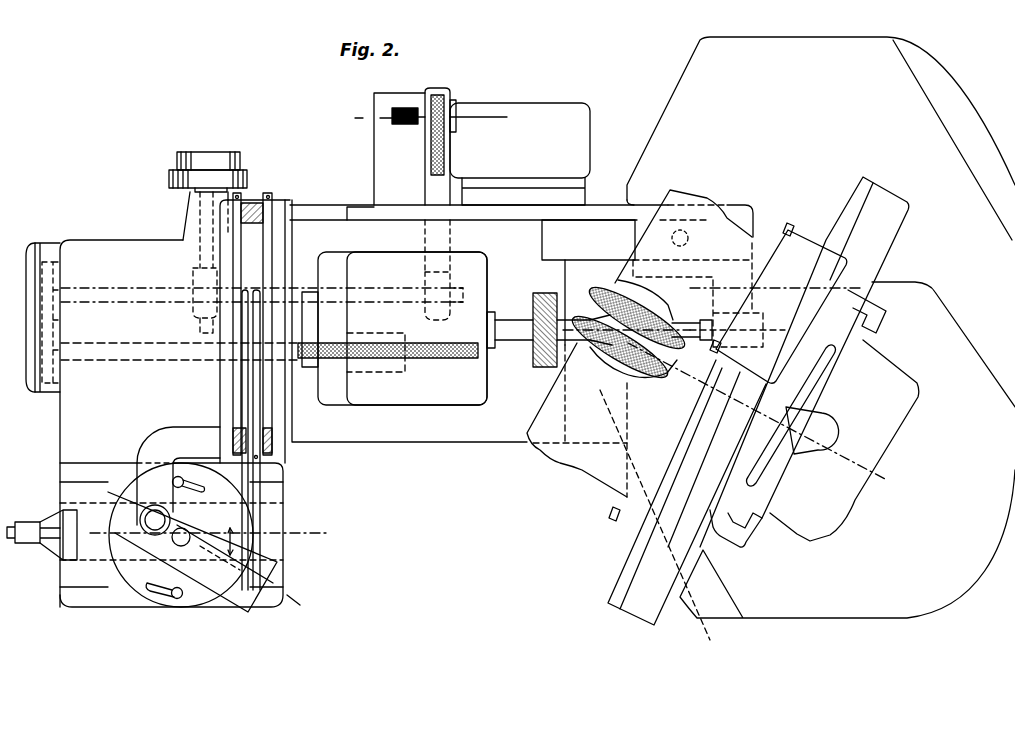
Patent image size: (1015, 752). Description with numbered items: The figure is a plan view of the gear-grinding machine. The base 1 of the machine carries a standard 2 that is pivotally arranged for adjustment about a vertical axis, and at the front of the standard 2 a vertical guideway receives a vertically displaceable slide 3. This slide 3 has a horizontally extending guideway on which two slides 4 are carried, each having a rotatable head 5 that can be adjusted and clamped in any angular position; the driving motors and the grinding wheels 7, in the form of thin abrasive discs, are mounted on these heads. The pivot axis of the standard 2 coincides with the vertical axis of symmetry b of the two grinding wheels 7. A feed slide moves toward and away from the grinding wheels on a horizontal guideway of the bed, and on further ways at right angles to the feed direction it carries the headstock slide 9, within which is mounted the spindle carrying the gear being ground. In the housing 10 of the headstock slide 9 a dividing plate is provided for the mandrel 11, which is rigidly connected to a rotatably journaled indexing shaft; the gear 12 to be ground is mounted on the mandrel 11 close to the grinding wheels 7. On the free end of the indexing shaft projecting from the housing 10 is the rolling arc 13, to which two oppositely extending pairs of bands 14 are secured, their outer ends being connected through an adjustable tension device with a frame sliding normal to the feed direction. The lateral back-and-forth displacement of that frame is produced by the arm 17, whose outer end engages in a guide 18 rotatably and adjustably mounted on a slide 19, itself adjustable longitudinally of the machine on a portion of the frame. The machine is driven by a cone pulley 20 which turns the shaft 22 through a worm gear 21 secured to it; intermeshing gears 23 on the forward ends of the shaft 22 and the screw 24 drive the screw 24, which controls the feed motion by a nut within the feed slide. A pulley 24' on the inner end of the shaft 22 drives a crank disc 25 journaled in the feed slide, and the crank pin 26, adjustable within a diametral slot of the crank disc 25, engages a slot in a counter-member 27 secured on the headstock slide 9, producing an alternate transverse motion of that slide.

The base 1 is at (815, 48).
The standard 2 is at (935, 318).
The slide 3 is at (880, 318).
The slides 4 is at (807, 237).
The rotatable head 5 is at (757, 247).
The grinding wheels 7 is at (673, 337).
The vertical axis of symmetry b is at (610, 295).
The headstock slide 9 is at (480, 437).
The housing 10 is at (450, 393).
The spindle or mandrel 11 is at (513, 333).
The gear 12 is at (538, 305).
The rolling arc 13 is at (240, 350).
The bands 14 is at (270, 272).
The arm 17 is at (160, 445).
The guide 18 is at (233, 598).
The slide 19 is at (73, 545).
The cone pulley 20 is at (203, 175).
The worm gear 21 is at (200, 278).
The shaft 22 is at (128, 295).
The intermeshing gears 23 is at (60, 320).
The screw 24 is at (269, 339).
The pulley 24' is at (422, 270).
The crank disc 25 is at (445, 100).
The crank pin 26 is at (404, 108).
The counter-member 27 is at (378, 104).